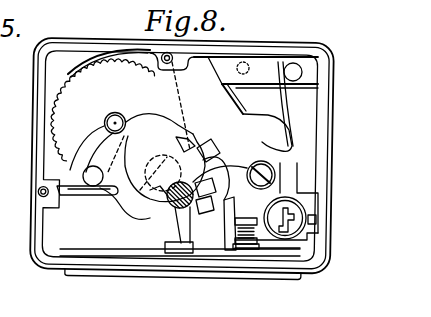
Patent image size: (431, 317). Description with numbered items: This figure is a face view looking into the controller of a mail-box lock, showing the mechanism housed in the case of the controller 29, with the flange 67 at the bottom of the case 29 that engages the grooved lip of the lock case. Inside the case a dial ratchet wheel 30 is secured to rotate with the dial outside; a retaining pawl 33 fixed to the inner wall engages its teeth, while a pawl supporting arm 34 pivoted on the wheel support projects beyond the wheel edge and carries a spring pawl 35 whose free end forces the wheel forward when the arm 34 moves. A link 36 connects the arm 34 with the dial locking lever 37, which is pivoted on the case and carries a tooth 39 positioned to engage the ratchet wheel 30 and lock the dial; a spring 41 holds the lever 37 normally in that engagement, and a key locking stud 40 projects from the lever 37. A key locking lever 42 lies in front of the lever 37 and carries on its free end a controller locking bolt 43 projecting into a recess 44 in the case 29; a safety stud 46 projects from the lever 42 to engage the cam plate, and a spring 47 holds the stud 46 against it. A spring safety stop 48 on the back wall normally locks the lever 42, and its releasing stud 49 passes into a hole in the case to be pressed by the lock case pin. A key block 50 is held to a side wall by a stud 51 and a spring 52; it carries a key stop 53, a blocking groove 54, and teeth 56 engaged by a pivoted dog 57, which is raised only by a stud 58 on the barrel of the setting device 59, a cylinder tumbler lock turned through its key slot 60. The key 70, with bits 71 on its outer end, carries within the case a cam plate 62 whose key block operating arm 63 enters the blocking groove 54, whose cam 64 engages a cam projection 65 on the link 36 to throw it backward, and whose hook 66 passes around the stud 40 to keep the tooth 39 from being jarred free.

The case of the controller 29 is at (326, 88).
The dial ratchet wheel 30 is at (66, 99).
The retaining pawl 33 is at (88, 57).
The pawl supporting arm 34 is at (96, 134).
The pawl 35 is at (91, 196).
The link 36 is at (137, 114).
The dial locking lever 37 is at (186, 134).
The tooth 39 is at (165, 157).
The key locking stud 40 is at (210, 177).
The spring 41 is at (248, 100).
The key locking lever 42 is at (242, 61).
The controller locking bolt 43 is at (205, 80).
The recess 44 is at (150, 45).
The safety stud 46 is at (214, 148).
The spring 47 is at (296, 119).
The safety stop 48 is at (267, 63).
The releasing stud 49 is at (262, 52).
The key block 50 is at (212, 253).
The stud 51 is at (247, 252).
The spring 52 is at (251, 252).
The key stop 53 is at (247, 219).
The blocking groove 54 is at (163, 230).
The teeth 56 is at (212, 250).
The pivoted dog 57 is at (273, 249).
The stud 58 is at (289, 220).
The setting device 59 is at (307, 210).
The key slot 60 is at (316, 220).
The cam plate 62 is at (162, 192).
The key block operating arm 63 is at (180, 250).
The cam 64 is at (170, 200).
The cam projection 65 is at (120, 205).
The hook 66 is at (256, 165).
The flange 67 is at (98, 270).
The key 70 is at (167, 246).
The bits 71 is at (216, 202).